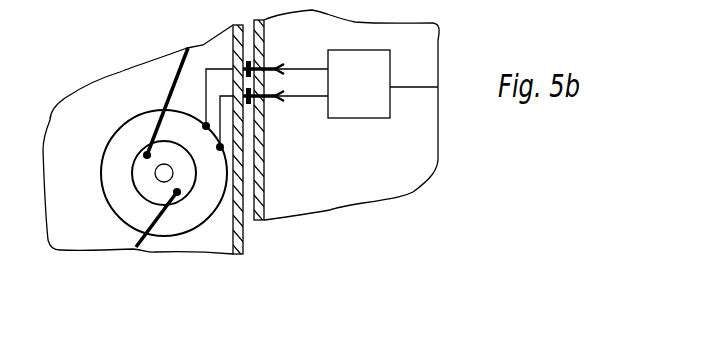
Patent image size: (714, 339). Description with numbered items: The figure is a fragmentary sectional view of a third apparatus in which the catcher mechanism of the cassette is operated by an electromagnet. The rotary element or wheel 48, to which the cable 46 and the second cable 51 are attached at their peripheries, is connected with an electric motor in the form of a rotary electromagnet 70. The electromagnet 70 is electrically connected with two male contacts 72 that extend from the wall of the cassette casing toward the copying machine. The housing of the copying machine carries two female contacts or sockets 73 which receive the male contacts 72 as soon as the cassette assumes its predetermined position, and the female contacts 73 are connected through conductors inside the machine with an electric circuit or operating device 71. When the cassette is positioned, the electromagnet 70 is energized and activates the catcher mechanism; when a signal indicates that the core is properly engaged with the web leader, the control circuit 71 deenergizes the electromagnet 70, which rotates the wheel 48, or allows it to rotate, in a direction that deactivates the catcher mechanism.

The cable 46 is at (142, 245).
The rotary element or wheel 48 is at (143, 175).
The second flexible element (cable) 51 is at (172, 87).
The rotary electromagnet 70 is at (139, 127).
The electric circuit (operating device) 71 is at (383, 64).
The male contacts 72 is at (238, 82).
The female contacts or sockets 73 is at (276, 72).